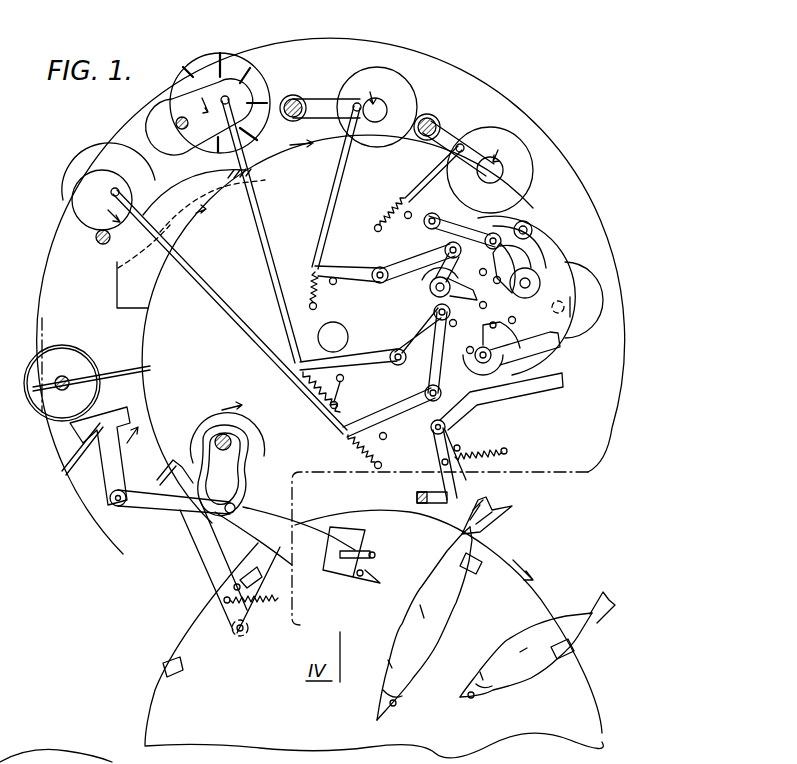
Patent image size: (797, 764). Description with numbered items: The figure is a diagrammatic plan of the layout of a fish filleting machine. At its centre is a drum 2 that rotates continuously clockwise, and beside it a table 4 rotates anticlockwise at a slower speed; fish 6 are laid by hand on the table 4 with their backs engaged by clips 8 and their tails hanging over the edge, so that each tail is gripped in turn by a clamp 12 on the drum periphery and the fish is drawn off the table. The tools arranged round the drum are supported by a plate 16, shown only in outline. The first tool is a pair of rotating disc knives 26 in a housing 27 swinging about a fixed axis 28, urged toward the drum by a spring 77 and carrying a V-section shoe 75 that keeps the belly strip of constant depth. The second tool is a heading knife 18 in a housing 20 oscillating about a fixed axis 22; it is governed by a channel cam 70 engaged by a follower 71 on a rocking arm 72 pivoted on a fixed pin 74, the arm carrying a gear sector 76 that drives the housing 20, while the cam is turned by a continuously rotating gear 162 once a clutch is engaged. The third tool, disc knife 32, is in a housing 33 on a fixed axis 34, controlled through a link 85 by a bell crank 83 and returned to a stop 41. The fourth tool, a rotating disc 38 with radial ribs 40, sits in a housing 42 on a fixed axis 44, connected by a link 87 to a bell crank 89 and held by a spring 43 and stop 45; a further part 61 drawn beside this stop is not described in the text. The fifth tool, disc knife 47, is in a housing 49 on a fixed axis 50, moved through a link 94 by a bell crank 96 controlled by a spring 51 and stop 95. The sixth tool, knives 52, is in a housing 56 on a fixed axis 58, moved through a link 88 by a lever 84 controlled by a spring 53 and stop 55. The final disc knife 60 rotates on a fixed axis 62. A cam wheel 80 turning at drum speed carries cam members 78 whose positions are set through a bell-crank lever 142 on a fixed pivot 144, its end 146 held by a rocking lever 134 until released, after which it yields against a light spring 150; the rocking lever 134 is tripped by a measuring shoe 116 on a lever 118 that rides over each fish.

The drum 2 is at (157, 328).
The table 4 is at (580, 690).
The fish 6 is at (510, 677).
The clips 8 is at (573, 645).
The clamps 12 is at (120, 752).
The plate 16 is at (590, 471).
The heading knife 18 is at (140, 370).
The housing 20 is at (100, 422).
The fixed axis 22 is at (62, 415).
The rotating disc knives 26 is at (163, 452).
The housing 27 is at (218, 582).
The fixed axis 28 is at (232, 628).
The rotating disc knife 32 is at (97, 160).
The housing 33 is at (100, 195).
The fixed axis 34 is at (97, 235).
The rotating disc 38 is at (203, 68).
The radial ribs 40 is at (235, 57).
The stop 41 is at (387, 436).
The housing 42 is at (198, 102).
The spring 43 is at (312, 398).
The fixed axis 44 is at (178, 120).
The stop 45 is at (333, 406).
The rotating disc knife 47 is at (400, 92).
The housing 49 is at (337, 107).
The fixed axis 50 is at (293, 100).
The spring 51 is at (313, 275).
The knives 52 is at (520, 152).
The spring 53 is at (380, 221).
The stop 55 is at (407, 219).
The housing 56 is at (482, 165).
The fixed axis 58 is at (432, 118).
The disc knife 60 is at (583, 290).
The spring 61 is at (356, 448).
The fixed axis 62 is at (560, 297).
The channel cam 70 is at (250, 475).
The follower 71 is at (245, 497).
The rocking arm 72 is at (140, 500).
The fixed pin 74 is at (117, 498).
The shoe 75 is at (228, 516).
The gear sector 76 is at (103, 433).
The spring 77 is at (258, 612).
The cam member 78 is at (533, 353).
The cam wheel 80 is at (540, 260).
The bell crank 83 is at (417, 400).
The lever 84 is at (453, 215).
The link 85 is at (218, 302).
The link 87 is at (257, 220).
The link 88 is at (427, 178).
The bell crank 89 is at (363, 358).
The link 94 is at (336, 192).
The stop 95 is at (336, 285).
The bell crank 96 is at (360, 272).
The shoe 116 is at (338, 567).
The lever 118 is at (374, 555).
The rocking lever 134 is at (433, 497).
The bell-crank lever 142 is at (480, 403).
The fixed pivot 144 is at (441, 427).
The end 146 is at (480, 490).
The light spring 150 is at (507, 456).
The continuously rotating gear 162 is at (210, 418).